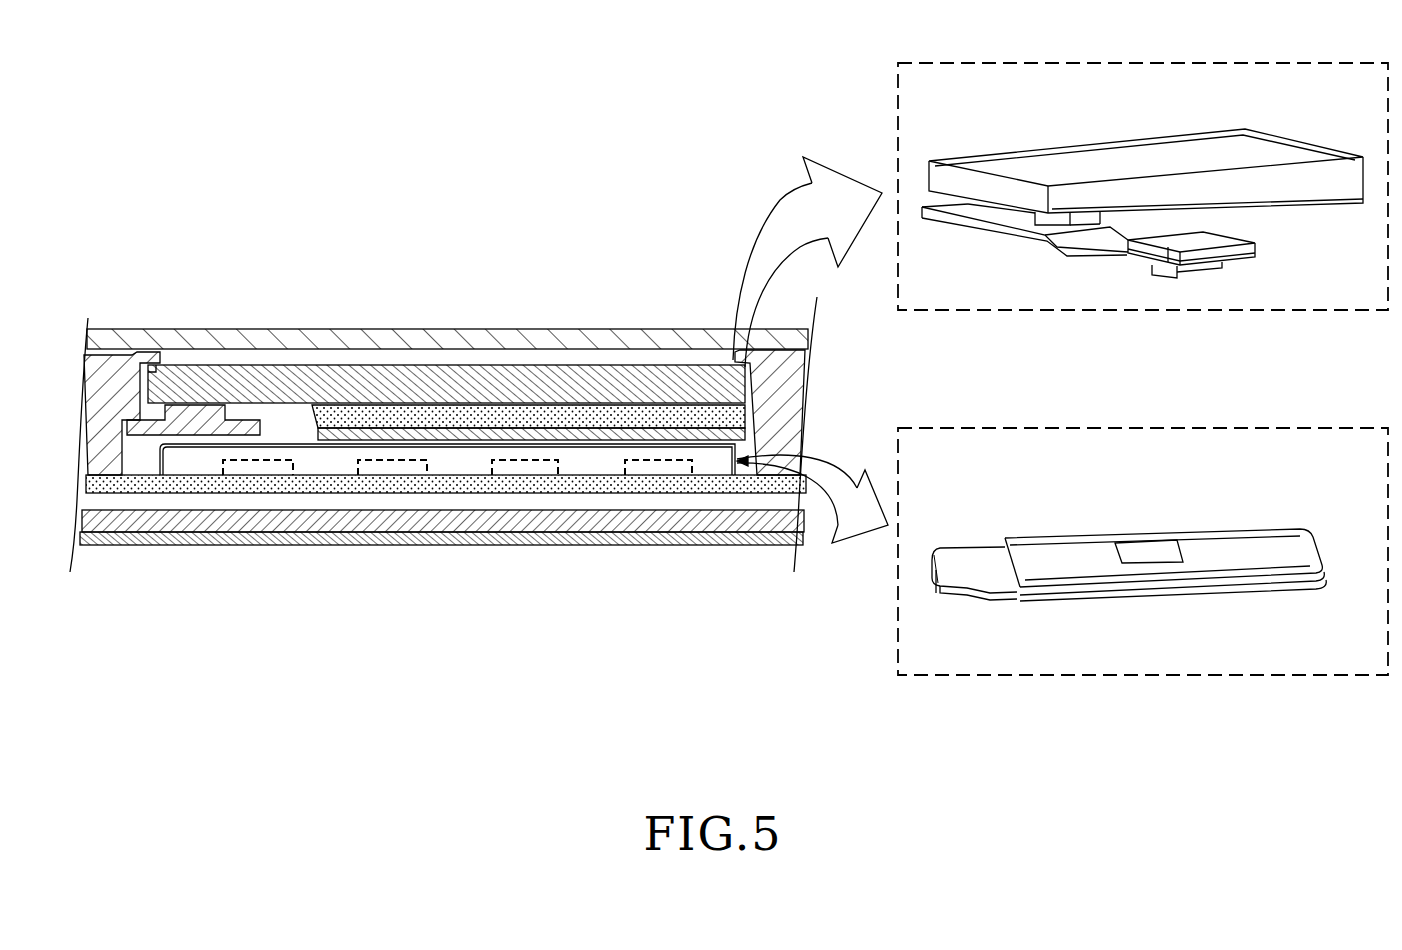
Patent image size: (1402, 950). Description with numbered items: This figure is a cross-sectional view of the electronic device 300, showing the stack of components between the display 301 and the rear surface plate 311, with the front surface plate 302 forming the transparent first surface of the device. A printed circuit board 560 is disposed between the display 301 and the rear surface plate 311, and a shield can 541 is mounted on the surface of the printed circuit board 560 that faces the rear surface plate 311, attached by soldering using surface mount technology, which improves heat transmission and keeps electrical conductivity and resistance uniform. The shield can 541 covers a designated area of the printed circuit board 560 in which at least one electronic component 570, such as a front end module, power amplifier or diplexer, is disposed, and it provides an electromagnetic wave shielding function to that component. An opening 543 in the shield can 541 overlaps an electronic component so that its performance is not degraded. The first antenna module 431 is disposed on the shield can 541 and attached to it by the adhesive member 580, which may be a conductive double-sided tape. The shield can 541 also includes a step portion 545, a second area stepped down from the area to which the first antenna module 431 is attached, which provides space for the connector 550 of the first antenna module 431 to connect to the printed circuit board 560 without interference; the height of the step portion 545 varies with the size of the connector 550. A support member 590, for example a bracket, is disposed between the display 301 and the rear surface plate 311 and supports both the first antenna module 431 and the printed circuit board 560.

The electronic device 300 is at (196, 226).
The rear surface plate 311 is at (292, 338).
The support member 590 is at (105, 375).
The first antenna module 431 is at (649, 350).
The adhesive member 580 is at (737, 433).
The connector 550 is at (175, 413).
The shield can 541 is at (142, 455).
The opening 543 is at (1146, 556).
The step portion 545 is at (998, 572).
The electronic component 570 is at (257, 470).
The printed circuit board 560 is at (100, 485).
The display 301 is at (180, 540).
The front surface plate 302 is at (248, 520).